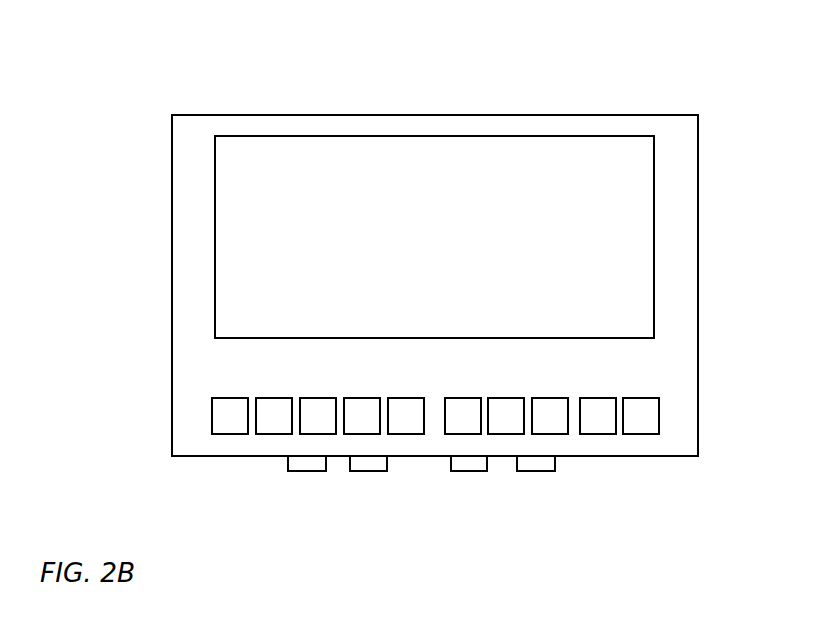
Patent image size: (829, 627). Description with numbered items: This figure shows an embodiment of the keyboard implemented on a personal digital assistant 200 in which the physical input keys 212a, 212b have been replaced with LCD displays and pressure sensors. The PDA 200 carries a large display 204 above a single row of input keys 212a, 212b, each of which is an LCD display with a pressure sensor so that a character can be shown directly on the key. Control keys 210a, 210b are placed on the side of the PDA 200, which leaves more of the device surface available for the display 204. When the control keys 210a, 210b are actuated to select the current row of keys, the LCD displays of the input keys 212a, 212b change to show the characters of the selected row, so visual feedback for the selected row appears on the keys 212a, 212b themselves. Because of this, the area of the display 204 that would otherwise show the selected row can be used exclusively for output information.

The personal digital assistant 200 is at (609, 87).
The display 204 is at (632, 287).
The control key 210a is at (332, 480).
The control key 210b is at (512, 484).
The input key 212a is at (251, 452).
The input key 212b is at (616, 455).